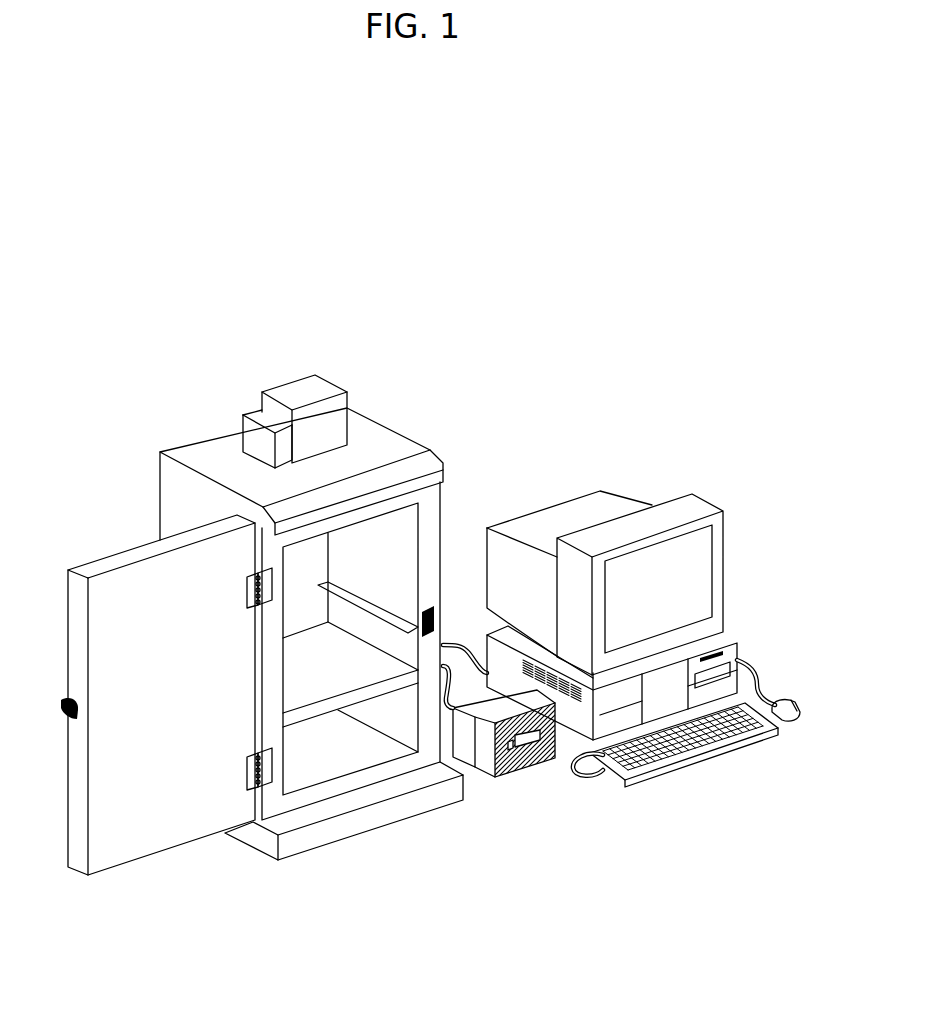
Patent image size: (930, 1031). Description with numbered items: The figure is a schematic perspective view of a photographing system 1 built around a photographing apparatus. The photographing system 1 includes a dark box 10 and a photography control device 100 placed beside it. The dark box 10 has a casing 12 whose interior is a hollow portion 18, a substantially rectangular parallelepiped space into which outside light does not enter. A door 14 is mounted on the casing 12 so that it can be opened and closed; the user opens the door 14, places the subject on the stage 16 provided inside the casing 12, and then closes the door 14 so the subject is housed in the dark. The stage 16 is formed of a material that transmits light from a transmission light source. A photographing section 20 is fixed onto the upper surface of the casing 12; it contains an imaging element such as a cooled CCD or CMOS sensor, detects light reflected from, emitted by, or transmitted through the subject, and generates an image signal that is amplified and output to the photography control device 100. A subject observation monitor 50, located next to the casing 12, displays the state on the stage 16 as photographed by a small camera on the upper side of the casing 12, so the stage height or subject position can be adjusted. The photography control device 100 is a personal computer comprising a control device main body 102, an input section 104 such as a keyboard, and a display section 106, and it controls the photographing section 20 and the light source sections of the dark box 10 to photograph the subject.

The photographing system 1 is at (549, 321).
The dark box 10 is at (278, 368).
The casing 12 is at (195, 446).
The door 14 is at (192, 835).
The stage 16 is at (365, 695).
The hollow portion 18 is at (402, 527).
The photographing section 20 is at (364, 408).
The subject observation monitor 50 is at (522, 767).
The photography control device 100 is at (654, 474).
The control device main body 102 is at (720, 643).
The input section 104 is at (710, 755).
The display section 106 is at (718, 548).